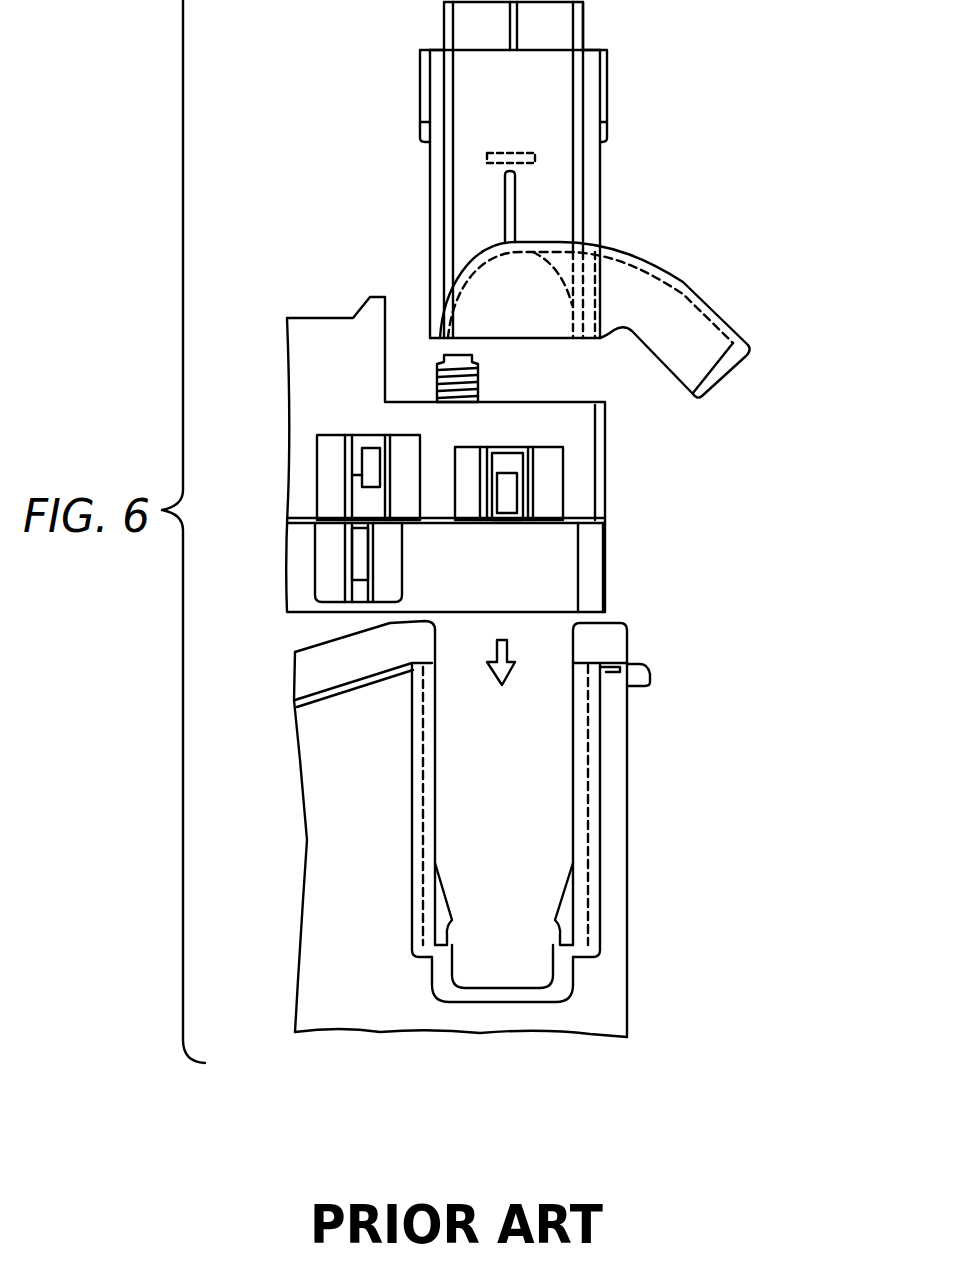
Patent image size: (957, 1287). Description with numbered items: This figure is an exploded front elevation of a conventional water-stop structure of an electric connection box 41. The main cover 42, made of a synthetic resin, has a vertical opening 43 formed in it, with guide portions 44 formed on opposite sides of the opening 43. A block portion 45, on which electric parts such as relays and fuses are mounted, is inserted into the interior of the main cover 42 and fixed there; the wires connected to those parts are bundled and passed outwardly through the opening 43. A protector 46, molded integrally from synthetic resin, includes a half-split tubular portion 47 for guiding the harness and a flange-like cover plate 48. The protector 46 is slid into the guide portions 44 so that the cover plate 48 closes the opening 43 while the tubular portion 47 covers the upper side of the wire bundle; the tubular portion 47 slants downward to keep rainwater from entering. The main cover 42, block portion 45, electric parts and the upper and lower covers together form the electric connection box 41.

The electric connection box 41 is at (810, 487).
The main cover 42 is at (635, 789).
The opening 43 is at (553, 850).
The guide portions 44 is at (582, 728).
The block portion 45 is at (605, 508).
The protector 46 is at (605, 153).
The tubular portion 47 is at (683, 281).
The cover plate 48 is at (557, 188).